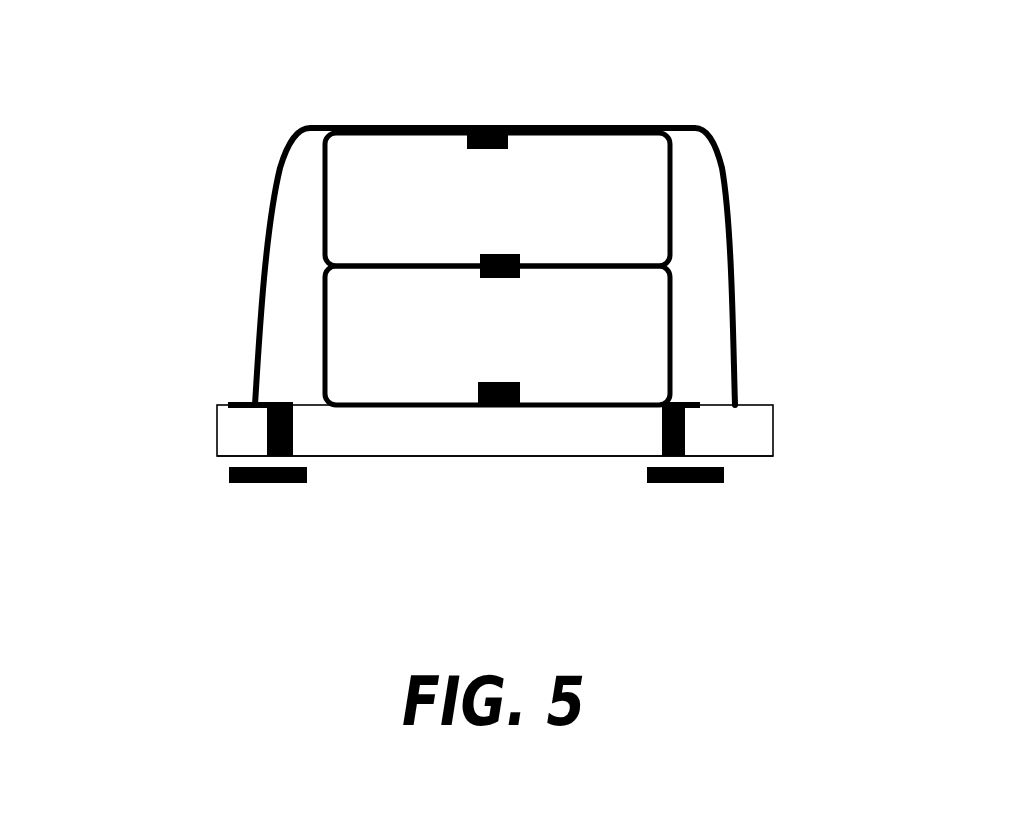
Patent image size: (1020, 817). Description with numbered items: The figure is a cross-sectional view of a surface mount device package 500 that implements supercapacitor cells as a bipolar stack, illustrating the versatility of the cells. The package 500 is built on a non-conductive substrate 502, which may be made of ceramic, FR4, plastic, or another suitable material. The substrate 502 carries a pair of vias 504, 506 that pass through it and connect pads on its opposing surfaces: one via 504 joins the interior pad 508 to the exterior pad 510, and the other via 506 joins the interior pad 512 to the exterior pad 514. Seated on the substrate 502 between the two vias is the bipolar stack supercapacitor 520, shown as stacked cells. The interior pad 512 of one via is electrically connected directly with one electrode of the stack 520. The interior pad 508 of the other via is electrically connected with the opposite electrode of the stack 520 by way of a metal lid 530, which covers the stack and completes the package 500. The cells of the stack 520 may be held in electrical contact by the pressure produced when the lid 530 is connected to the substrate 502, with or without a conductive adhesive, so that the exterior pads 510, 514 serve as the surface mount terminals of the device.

The device package 500 is at (183, 131).
The non-conductive substrate 502 is at (773, 432).
The via 504 is at (357, 453).
The via 506 is at (552, 392).
The interior pad 508 is at (245, 403).
The pad 510 is at (262, 483).
The interior pad 512 is at (686, 402).
The pad 514 is at (687, 483).
The bipolar stack supercapacitor 520 is at (682, 327).
The metal lid 530 is at (735, 303).